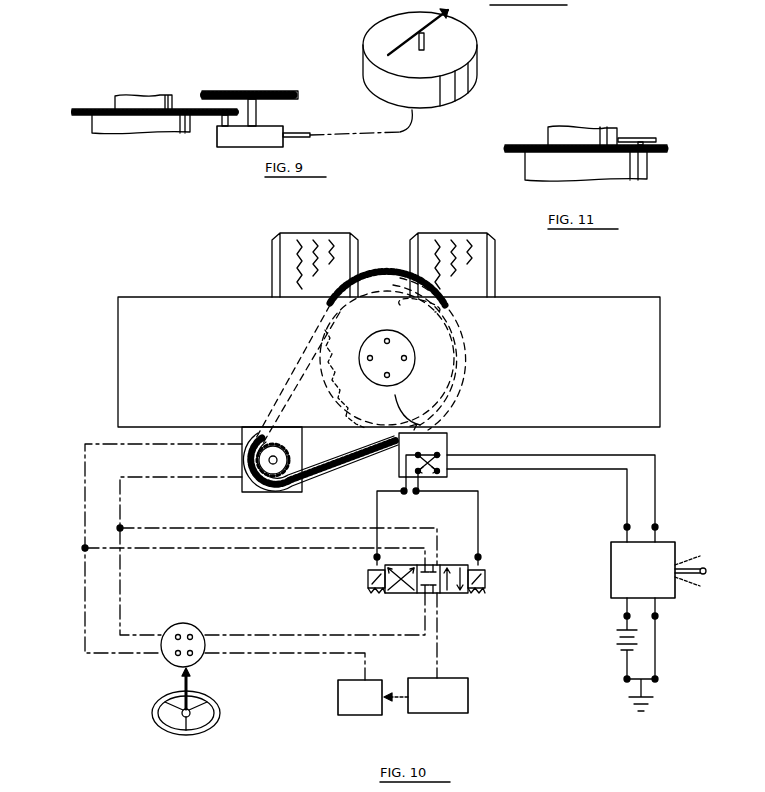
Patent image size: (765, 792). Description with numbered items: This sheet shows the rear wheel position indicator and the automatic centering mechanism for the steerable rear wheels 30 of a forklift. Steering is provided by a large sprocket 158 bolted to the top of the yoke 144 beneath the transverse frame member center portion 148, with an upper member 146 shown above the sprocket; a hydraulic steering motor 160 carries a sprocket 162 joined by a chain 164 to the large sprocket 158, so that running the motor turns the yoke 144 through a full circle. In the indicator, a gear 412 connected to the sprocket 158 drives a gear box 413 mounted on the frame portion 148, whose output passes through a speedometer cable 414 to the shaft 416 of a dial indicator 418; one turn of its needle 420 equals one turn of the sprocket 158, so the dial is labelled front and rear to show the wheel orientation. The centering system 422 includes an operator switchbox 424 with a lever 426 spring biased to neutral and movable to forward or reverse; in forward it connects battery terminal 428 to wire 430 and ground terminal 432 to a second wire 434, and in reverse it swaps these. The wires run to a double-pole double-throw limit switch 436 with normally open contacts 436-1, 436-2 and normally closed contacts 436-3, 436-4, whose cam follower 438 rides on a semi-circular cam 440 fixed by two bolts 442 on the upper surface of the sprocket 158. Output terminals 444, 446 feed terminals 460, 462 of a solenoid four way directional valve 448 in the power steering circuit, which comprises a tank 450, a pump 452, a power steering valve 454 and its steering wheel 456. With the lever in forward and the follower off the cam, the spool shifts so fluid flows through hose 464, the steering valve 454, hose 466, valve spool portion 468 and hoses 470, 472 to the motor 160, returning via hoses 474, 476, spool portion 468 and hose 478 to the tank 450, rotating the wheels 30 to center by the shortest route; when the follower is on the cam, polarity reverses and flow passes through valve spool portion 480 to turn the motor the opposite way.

In FIG. 10, the rear wheels 30 is at (316, 240).
In FIG. 9, the yoke 144 is at (92, 126).
In FIG. 11, the yoke 144 is at (525, 167).
In FIG. 9, the upper bracket 146 is at (133, 96).
In FIG. 11, the upper bracket 146 is at (565, 127).
In FIG. 9, the transverse frame member center portion 148 is at (230, 91).
In FIG. 10, the transverse frame member center portion 148 is at (556, 297).
In FIG. 9, the large sprocket 158 is at (86, 110).
In FIG. 11, the large sprocket 158 is at (667, 148).
In FIG. 10, the large sprocket 158 is at (380, 290).
In FIG. 10, the hydraulic steering motor 160 is at (242, 487).
In FIG. 10, the sprocket 162 is at (262, 460).
In FIG. 10, the chain 164 is at (256, 438).
In FIG. 9, the gear 412 is at (219, 120).
In FIG. 9, the gear box 413 is at (250, 147).
In FIG. 9, the speedometer cable 414 is at (296, 133).
In FIG. 9, the shaft 416 is at (424, 44).
In FIG. 9, the dial indicator 418 is at (478, 65).
In FIG. 9, the needle 420 is at (404, 44).
In FIG. 10, the centering system 422 is at (590, 297).
In FIG. 10, the switchbox 424 is at (665, 542).
In FIG. 10, the lever 426 is at (705, 565).
In FIG. 10, the battery terminal 428 is at (627, 616).
In FIG. 10, the wire 430 is at (627, 510).
In FIG. 10, the ground terminal 432 is at (658, 616).
In FIG. 10, the second wire 434 is at (655, 512).
In FIG. 10, the limit switch 436 is at (447, 472).
In FIG. 10, the normally open contact 436-1 is at (420, 446).
In FIG. 10, the normally open contact 436-2 is at (437, 474).
In FIG. 10, the normally closed contact 436-3 is at (440, 455).
In FIG. 10, the normally closed contact 436-4 is at (440, 462).
In FIG. 10, the cam follower 438 is at (354, 368).
In FIG. 11, the semi-circular cam 440 is at (656, 139).
In FIG. 10, the semi-circular cam 440 is at (436, 354).
In FIG. 11, the bolts 442 is at (640, 138).
In FIG. 10, the bolts 442 is at (440, 310).
In FIG. 10, the output terminal 444 is at (404, 494).
In FIG. 10, the output terminal 446 is at (416, 494).
In FIG. 10, the solenoid four way directional valve 448 is at (464, 599).
In FIG. 10, the tank 450 is at (468, 693).
In FIG. 10, the pump 452 is at (338, 695).
In FIG. 10, the power steering valve 454 is at (196, 627).
In FIG. 10, the steering wheel 456 is at (220, 706).
In FIG. 10, the terminal 460 is at (481, 557).
In FIG. 10, the terminal 462 is at (374, 557).
In FIG. 10, the hose 464 is at (300, 653).
In FIG. 10, the hose 466 is at (264, 635).
In FIG. 10, the valve spool portion 468 is at (447, 565).
In FIG. 10, the hose 470 is at (262, 548).
In FIG. 10, the hose 472 is at (85, 486).
In FIG. 10, the hose 474 is at (122, 480).
In FIG. 10, the hose 476 is at (240, 528).
In FIG. 10, the hose 478 is at (440, 645).
In FIG. 10, the valve spool portion 480 is at (408, 593).